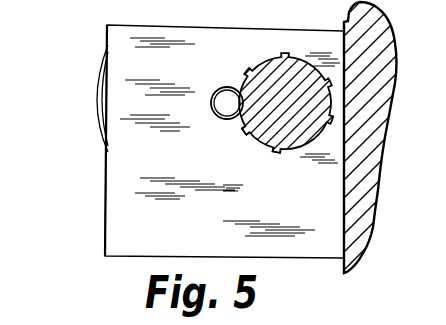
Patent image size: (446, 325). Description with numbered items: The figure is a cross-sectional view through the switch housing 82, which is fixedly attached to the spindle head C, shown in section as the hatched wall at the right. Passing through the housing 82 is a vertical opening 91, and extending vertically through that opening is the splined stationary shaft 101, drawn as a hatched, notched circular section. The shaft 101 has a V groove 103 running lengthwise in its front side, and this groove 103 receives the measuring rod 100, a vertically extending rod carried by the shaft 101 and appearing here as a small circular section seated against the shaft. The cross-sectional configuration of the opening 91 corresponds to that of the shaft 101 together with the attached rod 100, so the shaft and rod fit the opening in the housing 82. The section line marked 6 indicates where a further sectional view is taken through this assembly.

The section line 6- 6 is at (58, 100).
The spindle head C is at (368, 145).
The housing 82 is at (327, 208).
The V groove 103 is at (250, 106).
The rod 100 is at (220, 89).
The vertical opening 91 is at (246, 131).
The splined stationary shaft 101 is at (288, 150).